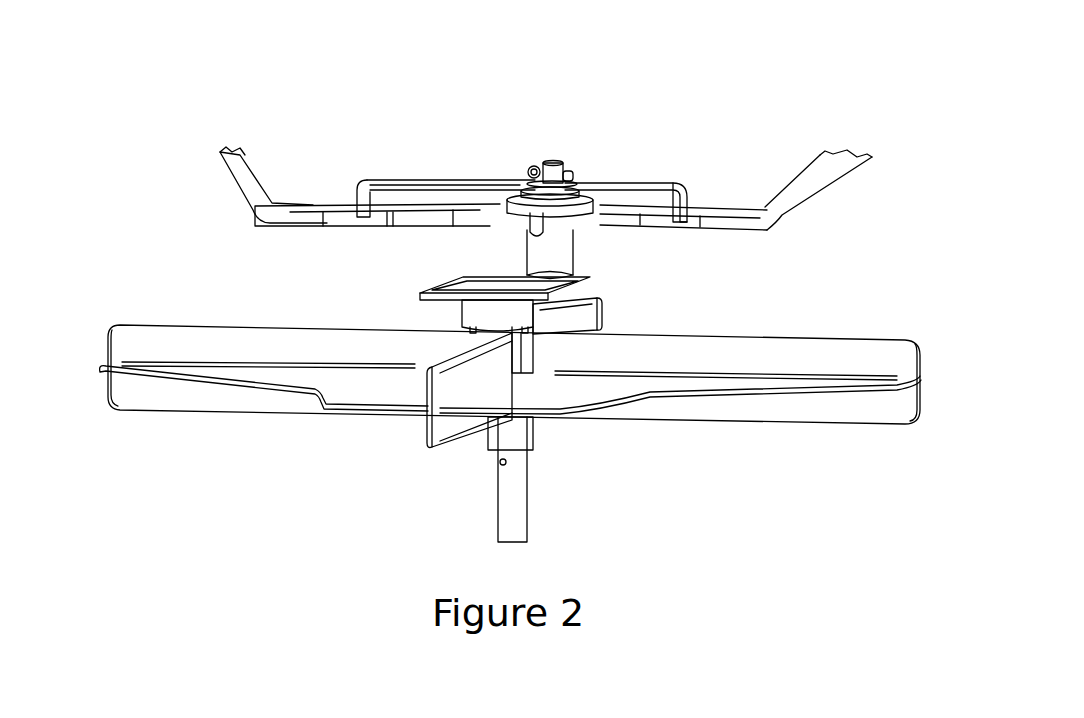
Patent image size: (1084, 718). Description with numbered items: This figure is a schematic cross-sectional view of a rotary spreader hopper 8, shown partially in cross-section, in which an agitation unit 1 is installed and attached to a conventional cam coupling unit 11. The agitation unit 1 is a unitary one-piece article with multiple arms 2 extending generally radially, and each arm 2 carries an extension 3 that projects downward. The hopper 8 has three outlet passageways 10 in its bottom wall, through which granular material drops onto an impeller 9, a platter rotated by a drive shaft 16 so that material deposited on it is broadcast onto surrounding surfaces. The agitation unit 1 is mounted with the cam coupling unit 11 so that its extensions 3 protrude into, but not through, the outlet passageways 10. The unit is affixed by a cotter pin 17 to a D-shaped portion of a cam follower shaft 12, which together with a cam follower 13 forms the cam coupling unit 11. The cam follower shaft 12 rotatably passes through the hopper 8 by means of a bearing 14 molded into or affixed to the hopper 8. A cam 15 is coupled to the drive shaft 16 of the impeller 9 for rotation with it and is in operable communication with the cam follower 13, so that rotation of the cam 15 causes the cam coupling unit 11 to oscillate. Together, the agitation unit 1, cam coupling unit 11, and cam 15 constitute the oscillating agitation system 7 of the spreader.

The agitation unit 1 is at (584, 178).
The arm 2 is at (403, 181).
The extension 3 is at (355, 183).
The oscillating agitation system 7 is at (790, 289).
The hopper 8 is at (817, 197).
The impeller 9 is at (608, 423).
The outlet passageway 10 is at (463, 225).
The cam coupling unit 11 is at (481, 305).
The cam follower shaft 12 is at (550, 160).
The cam follower 13 is at (602, 287).
The bearing 14 is at (575, 248).
The cam 15 is at (457, 320).
The drive shaft 16 is at (533, 513).
The cotter pin 17 is at (525, 163).